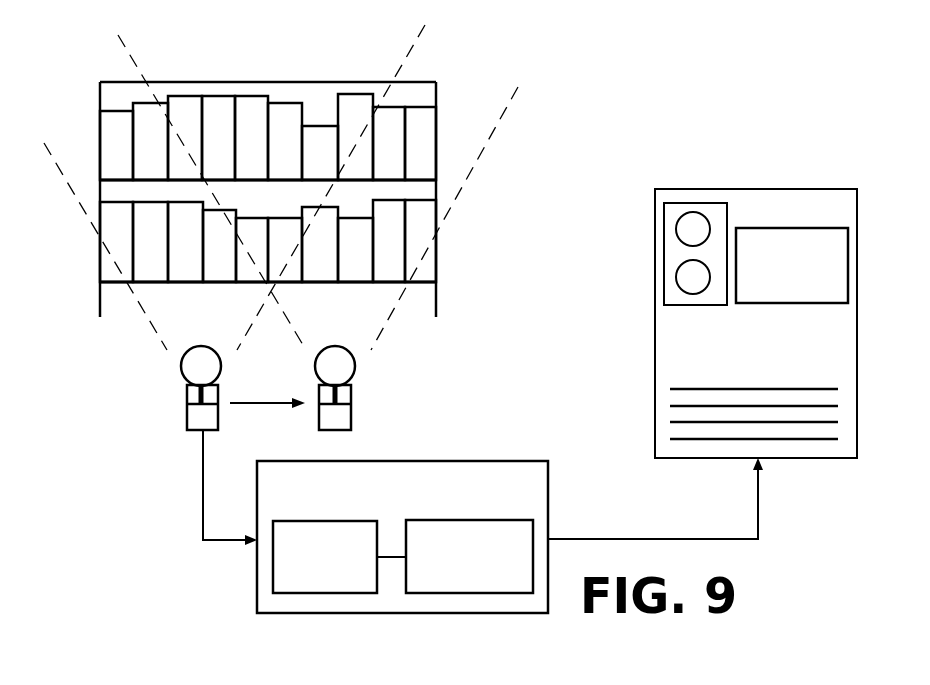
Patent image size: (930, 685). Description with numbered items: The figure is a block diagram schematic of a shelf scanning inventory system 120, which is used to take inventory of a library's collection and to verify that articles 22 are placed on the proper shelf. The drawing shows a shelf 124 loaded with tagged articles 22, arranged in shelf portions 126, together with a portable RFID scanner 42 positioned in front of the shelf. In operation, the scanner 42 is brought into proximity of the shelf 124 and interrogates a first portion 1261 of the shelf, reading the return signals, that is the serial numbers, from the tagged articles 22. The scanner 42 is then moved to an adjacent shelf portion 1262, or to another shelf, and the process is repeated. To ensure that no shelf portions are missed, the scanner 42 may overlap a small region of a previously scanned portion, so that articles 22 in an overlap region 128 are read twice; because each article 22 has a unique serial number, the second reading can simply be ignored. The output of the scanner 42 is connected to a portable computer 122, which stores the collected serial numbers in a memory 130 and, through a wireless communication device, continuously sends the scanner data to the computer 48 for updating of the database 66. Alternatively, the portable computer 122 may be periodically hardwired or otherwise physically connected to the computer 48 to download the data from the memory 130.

The shelf scanning inventory system 120 is at (222, 63).
The shelf 124 is at (98, 102).
The overlap region 128 is at (288, 90).
The articles 22 is at (395, 107).
The shelf portion 126 is at (283, 163).
The first portion of the shelf 1261 is at (125, 193).
The adjacent shelf portion 1262 is at (383, 187).
The portable RFID scanner 42 is at (186, 393).
The portable computer 122 is at (256, 554).
The memory 130 is at (352, 594).
The computer 48 is at (716, 189).
The database 66 is at (663, 222).